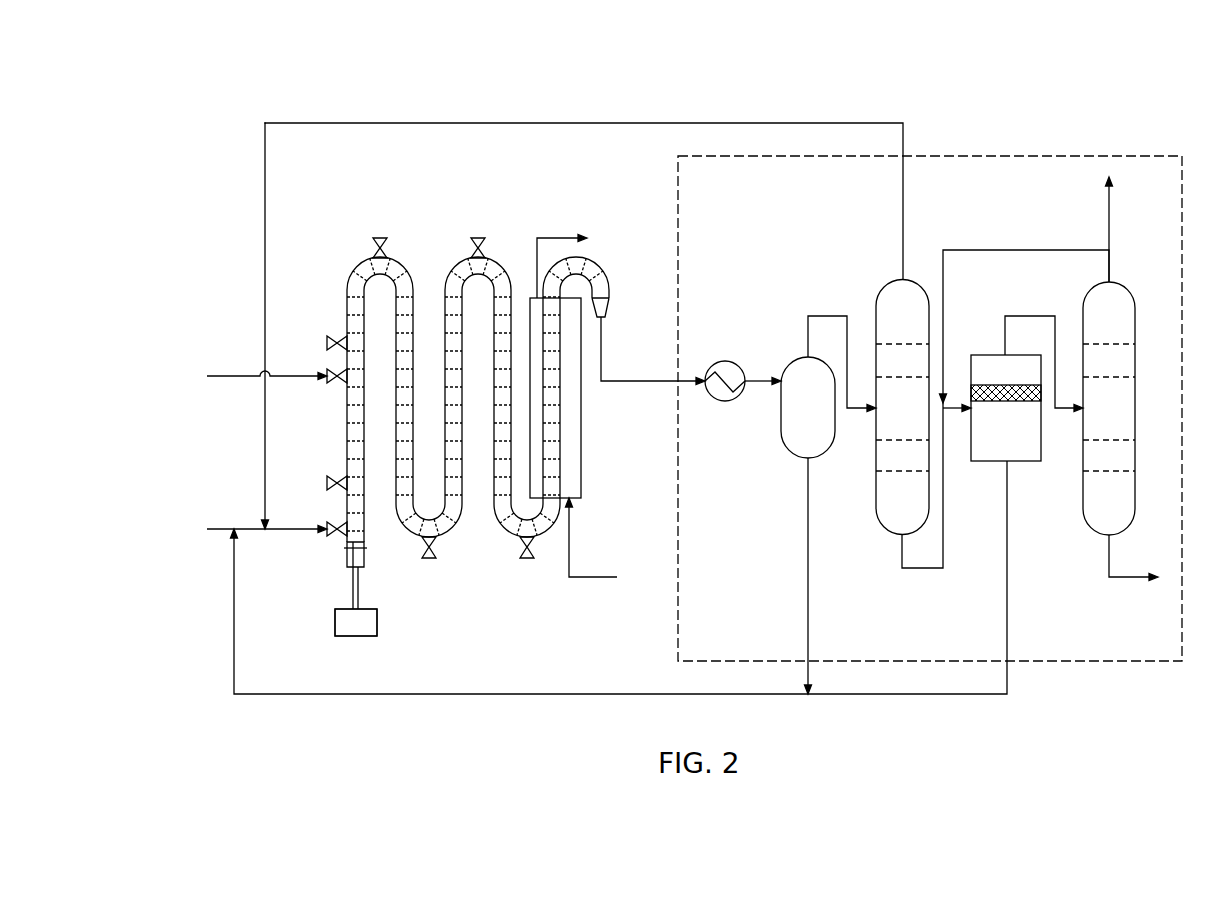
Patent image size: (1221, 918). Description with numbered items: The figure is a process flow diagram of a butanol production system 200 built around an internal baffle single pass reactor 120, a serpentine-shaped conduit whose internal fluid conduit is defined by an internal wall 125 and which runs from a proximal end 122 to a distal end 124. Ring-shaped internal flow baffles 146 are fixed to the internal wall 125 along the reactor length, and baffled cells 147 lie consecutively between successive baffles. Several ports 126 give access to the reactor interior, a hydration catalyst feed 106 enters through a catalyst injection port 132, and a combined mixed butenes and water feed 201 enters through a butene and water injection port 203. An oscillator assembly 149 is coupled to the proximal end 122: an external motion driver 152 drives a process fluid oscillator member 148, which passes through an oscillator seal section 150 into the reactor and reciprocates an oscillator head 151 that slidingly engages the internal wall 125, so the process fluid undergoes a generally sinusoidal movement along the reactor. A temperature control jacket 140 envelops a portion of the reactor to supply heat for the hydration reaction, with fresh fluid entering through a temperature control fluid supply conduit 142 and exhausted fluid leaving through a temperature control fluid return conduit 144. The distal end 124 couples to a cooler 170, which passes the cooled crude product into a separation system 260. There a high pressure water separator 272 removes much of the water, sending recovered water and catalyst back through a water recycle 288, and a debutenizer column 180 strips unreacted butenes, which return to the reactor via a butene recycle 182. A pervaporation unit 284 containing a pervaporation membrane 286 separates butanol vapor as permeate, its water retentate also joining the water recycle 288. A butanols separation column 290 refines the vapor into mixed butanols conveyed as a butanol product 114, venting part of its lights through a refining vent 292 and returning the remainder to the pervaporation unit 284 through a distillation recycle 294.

The butanol production system 200 is at (288, 104).
The butene recycle 182 is at (513, 122).
The internal baffle single pass reactor 120 is at (358, 266).
The internal wall 125 is at (352, 300).
The internal flow baffles 146 is at (452, 332).
The baffled cells 147 is at (392, 256).
The ports 126 is at (335, 342).
The catalyst injection port 132 is at (336, 384).
The butene and water injection port 203 is at (336, 526).
The hydration catalyst feed 106 is at (236, 380).
The combined mixed butenes and water feed 201 is at (220, 528).
The oscillator head 151 is at (348, 543).
The proximal end 122 is at (352, 567).
The oscillator seal section 150 is at (364, 562).
The process fluid oscillator member 148 is at (348, 593).
The external motion driver 152 is at (335, 627).
The oscillator assembly 149 is at (385, 622).
The temperature control fluid return conduit 144 is at (555, 236).
The temperature control jacket 140 is at (583, 423).
The temperature control fluid supply conduit 142 is at (587, 577).
The distal end 124 is at (600, 320).
The cooler 170 is at (723, 360).
The separation system 260 is at (777, 659).
The high pressure water separator 272 is at (826, 417).
The debutenizer column 180 is at (921, 417).
The distillation recycle 294 is at (1003, 249).
The pervaporation unit 284 is at (1024, 435).
The pervaporation membrane 286 is at (988, 383).
The butanols separation column 290 is at (1127, 417).
The refining vent 292 is at (1108, 220).
The butanol product 114 is at (1128, 580).
The water recycle 288 is at (595, 692).